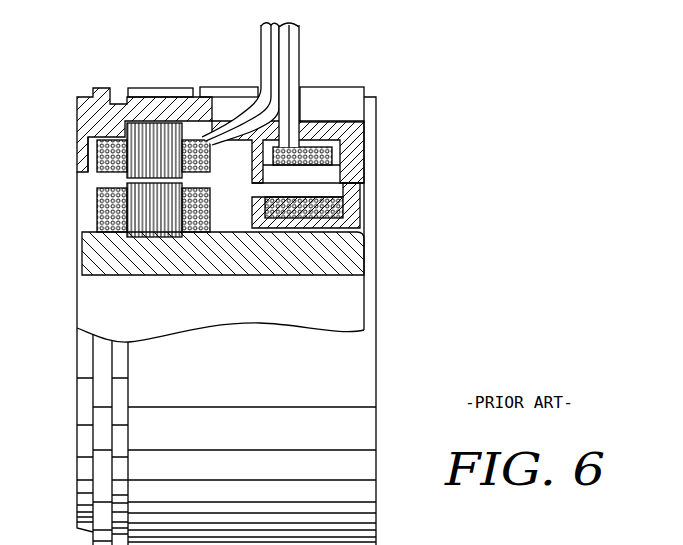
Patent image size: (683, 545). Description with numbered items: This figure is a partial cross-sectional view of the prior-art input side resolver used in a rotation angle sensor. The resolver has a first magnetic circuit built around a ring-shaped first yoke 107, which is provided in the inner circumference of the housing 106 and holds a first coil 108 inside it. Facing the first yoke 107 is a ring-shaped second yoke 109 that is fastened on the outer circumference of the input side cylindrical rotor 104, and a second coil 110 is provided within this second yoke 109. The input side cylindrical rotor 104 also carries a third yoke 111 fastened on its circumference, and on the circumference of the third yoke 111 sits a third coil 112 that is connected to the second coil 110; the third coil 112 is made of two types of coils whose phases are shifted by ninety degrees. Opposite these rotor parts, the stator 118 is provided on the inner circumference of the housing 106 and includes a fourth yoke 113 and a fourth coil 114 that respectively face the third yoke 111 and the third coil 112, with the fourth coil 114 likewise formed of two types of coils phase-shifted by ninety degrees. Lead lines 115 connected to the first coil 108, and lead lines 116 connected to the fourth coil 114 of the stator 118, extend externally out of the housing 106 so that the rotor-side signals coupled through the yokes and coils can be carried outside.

The input side cylindrical rotor 104 is at (350, 263).
The housing 106 is at (97, 92).
The first yoke 107 is at (353, 143).
The first coil 108 is at (333, 160).
The second yoke 109 is at (353, 216).
The second coil 110 is at (345, 202).
The third yoke 111 is at (145, 225).
The third coil 112 is at (100, 193).
The fourth yoke 113 is at (155, 133).
The fourth coil 114 is at (110, 148).
The lead lines 115 is at (302, 49).
The lead lines 116 is at (259, 54).
The stator 118 is at (88, 145).